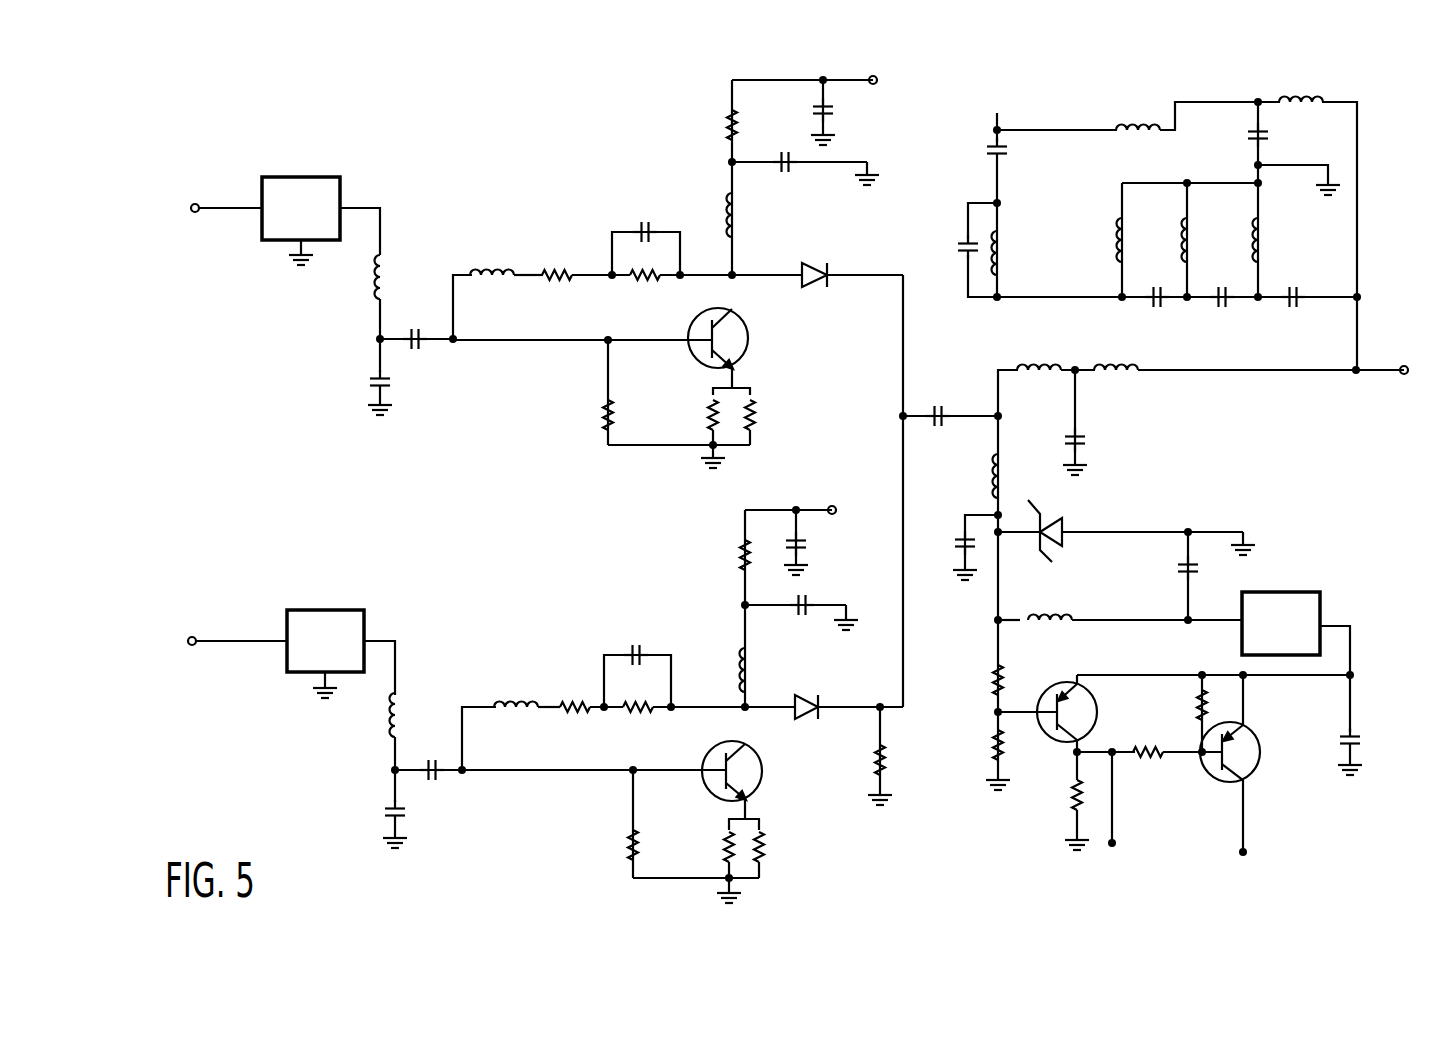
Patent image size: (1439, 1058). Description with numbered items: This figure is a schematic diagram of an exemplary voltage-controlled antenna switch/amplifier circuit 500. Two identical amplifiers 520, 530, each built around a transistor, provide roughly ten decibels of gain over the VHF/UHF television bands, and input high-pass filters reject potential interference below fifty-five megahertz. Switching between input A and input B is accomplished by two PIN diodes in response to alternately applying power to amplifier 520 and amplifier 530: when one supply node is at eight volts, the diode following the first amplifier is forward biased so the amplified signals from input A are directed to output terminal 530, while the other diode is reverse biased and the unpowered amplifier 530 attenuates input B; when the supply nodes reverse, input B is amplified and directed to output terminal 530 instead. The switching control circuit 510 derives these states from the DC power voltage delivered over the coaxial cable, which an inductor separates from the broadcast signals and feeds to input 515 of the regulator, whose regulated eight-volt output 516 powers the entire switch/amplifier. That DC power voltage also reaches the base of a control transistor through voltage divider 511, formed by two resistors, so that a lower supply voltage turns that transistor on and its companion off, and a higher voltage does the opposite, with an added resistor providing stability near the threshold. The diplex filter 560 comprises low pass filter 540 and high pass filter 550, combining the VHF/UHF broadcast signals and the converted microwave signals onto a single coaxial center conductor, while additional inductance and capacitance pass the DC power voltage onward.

The circuit 500 is at (798, 494).
The switching control circuit 510 is at (1165, 648).
The voltage divider 511 is at (988, 713).
The input of regulator 515 is at (1120, 616).
The regulator output 516 is at (1247, 680).
The amplifier 520 is at (550, 277).
The amplifier 530 is at (801, 651).
The low pass filter 540 is at (1109, 207).
The high pass filter 550 is at (1209, 216).
The diplex filter 560 is at (1203, 406).